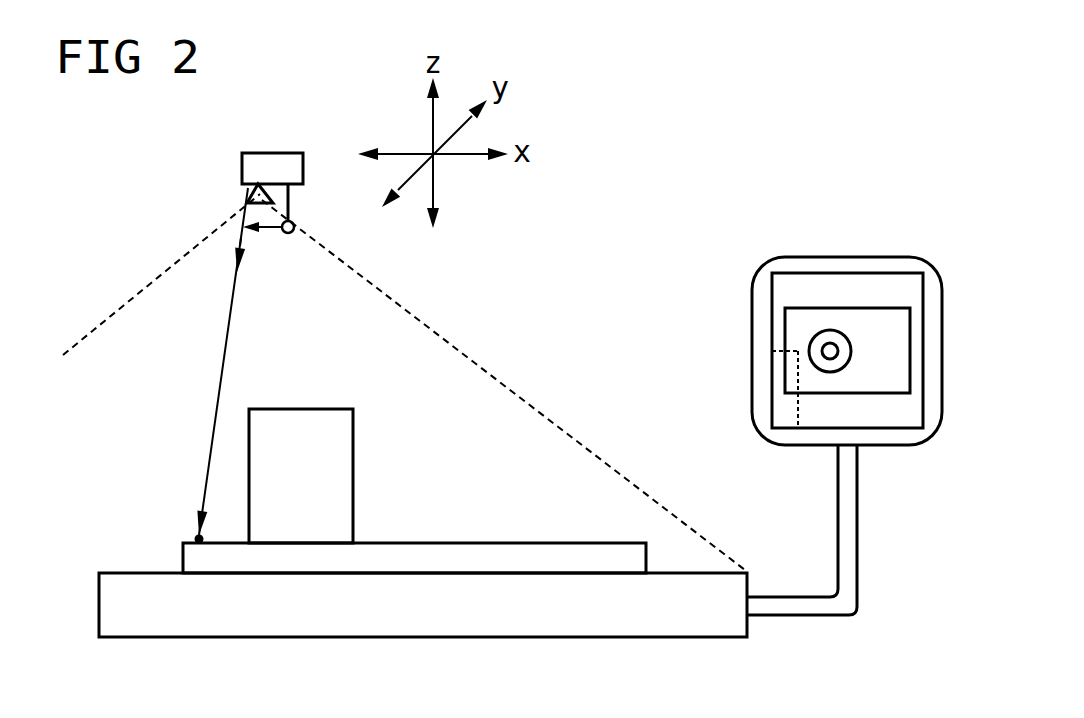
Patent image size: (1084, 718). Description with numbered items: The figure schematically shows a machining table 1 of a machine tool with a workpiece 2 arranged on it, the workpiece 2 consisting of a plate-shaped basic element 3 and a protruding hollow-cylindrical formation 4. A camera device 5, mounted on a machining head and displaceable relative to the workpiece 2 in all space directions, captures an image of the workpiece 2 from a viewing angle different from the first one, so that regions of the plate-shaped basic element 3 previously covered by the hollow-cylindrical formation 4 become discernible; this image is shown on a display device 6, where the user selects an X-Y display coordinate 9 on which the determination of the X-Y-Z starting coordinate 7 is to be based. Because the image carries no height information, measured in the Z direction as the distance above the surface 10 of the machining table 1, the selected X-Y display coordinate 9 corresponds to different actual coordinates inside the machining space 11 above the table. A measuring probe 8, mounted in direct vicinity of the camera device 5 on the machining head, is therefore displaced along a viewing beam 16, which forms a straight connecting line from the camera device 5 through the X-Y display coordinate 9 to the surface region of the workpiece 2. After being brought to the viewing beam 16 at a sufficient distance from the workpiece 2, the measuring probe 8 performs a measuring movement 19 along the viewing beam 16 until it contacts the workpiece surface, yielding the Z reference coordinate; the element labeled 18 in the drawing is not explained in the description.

The machining table 1 is at (112, 611).
The workpiece 2 is at (475, 394).
The plate-shaped basic element 3 is at (595, 555).
The hollow-cylindrical formation 4 is at (303, 518).
The camera device 5 is at (252, 195).
The display device 6 is at (858, 257).
The X-Y-Z starting coordinate 7 is at (180, 525).
The measuring probe 8 is at (289, 213).
The X-Y display coordinate 9 is at (785, 338).
The surface of the machining table 10 is at (698, 563).
The machining space 11 is at (162, 300).
The viewing beam 16 is at (220, 387).
The adjustment device 18 is at (277, 233).
The measuring movement 19 is at (240, 243).